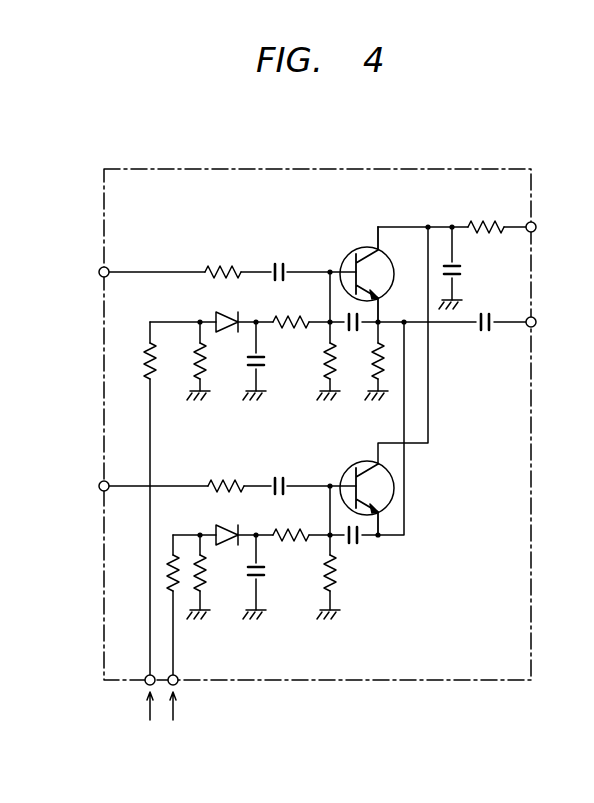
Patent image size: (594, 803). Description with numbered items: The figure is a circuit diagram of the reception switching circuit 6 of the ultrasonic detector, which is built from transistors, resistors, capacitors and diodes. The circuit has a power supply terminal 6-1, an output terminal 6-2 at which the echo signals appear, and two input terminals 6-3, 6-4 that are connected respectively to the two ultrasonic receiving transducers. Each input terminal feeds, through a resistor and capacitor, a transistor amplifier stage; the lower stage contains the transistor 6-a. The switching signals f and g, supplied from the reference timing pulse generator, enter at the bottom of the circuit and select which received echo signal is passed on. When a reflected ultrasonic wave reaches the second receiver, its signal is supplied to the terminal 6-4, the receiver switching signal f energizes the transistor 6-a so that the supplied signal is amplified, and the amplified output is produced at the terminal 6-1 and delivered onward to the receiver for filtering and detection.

The switching circuit 6 is at (280, 169).
The power supply terminal 6-1 is at (533, 222).
The output terminal 6-2 is at (533, 318).
The terminal 6-3 is at (99, 267).
The terminal 6-4 is at (98, 484).
The transistor 6-a is at (394, 487).
The switching signal g is at (146, 706).
The switching signal f is at (177, 706).